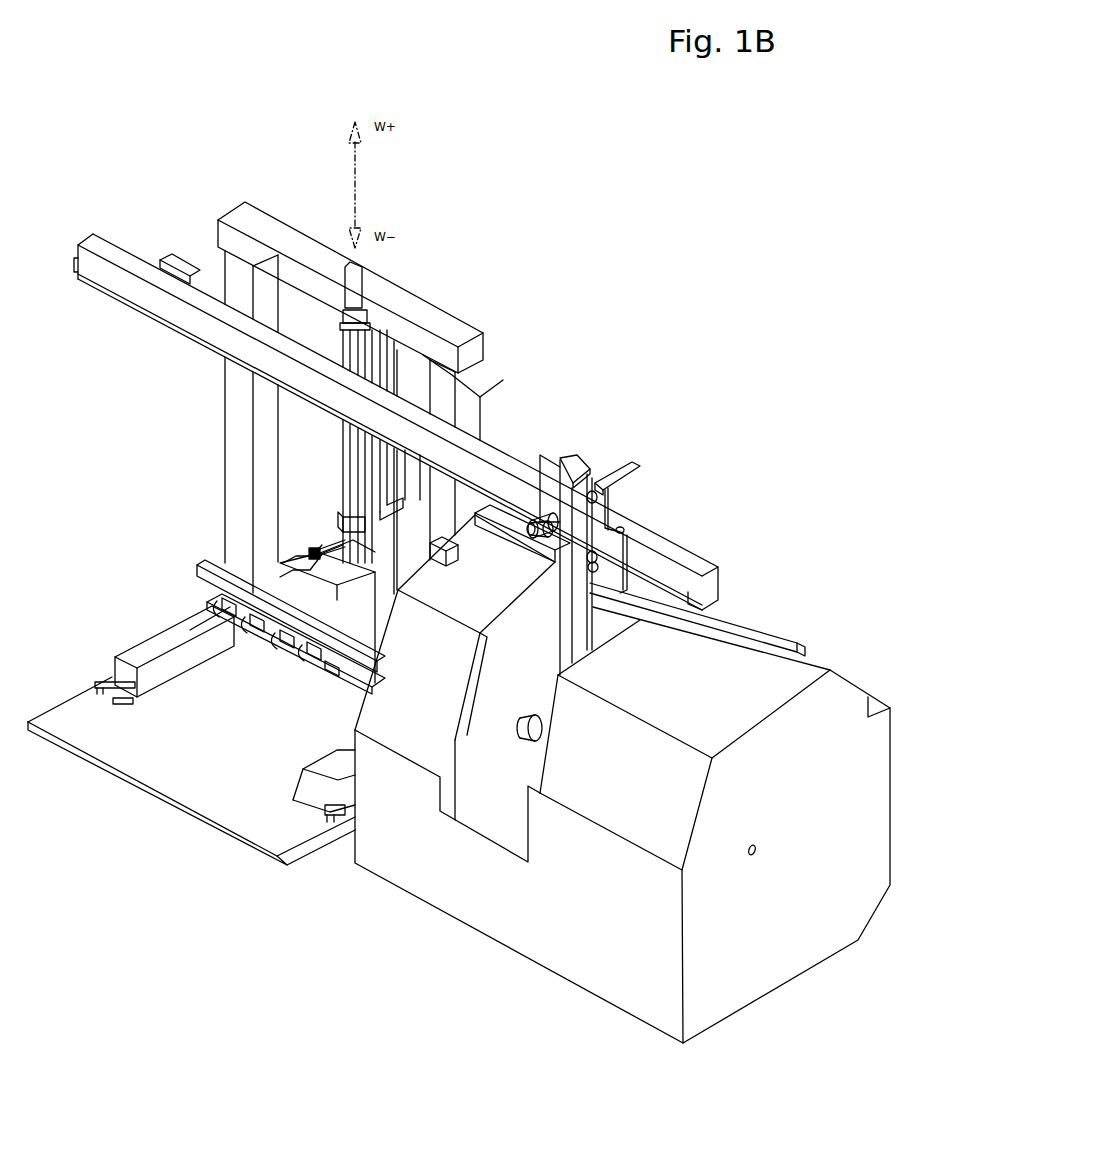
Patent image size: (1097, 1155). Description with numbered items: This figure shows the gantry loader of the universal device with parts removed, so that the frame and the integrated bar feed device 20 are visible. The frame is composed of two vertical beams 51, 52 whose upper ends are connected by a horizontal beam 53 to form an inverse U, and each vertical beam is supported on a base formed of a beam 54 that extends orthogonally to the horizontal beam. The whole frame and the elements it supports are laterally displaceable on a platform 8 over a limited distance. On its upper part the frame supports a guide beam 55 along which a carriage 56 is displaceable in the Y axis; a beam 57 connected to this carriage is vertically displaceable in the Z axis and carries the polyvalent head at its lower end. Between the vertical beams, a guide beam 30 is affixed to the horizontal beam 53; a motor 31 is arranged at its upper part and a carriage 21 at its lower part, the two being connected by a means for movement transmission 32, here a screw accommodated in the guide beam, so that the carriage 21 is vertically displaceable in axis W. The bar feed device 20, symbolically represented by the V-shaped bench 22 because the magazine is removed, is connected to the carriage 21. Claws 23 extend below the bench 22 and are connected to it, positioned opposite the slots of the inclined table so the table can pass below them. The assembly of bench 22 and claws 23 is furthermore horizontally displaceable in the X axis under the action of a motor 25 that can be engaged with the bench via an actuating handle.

The platform 8 is at (108, 745).
The bar feed device 20 is at (162, 590).
The carriage 21 is at (283, 548).
The V-shaped bench 22 is at (200, 572).
The claws 23 is at (325, 660).
The motor 25 is at (320, 528).
The guide beam 30 is at (380, 333).
The means for movement transmission 32 is at (391, 425).
The motor 31 is at (358, 284).
The vertical beam 51 is at (232, 430).
The vertical beam 52 is at (468, 415).
The horizontal beam 53 is at (452, 323).
The beam 54 is at (148, 650).
The guide beam 55 is at (508, 456).
The carriage 56 is at (555, 472).
The beam 57 is at (568, 513).